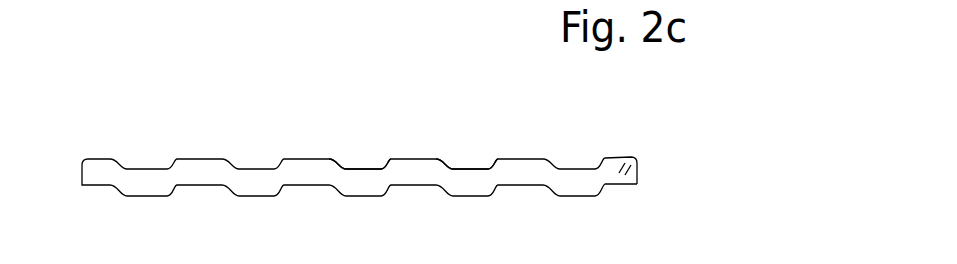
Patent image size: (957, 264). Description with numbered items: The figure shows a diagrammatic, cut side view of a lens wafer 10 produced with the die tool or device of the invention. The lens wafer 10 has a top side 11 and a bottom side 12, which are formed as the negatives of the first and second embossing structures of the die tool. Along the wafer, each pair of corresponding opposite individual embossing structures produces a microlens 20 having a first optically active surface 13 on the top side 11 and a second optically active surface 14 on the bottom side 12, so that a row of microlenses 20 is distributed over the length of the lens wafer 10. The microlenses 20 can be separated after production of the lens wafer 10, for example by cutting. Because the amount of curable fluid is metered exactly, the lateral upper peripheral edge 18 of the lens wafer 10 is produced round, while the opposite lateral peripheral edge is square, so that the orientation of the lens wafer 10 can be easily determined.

The lens wafer 10 is at (118, 86).
The top side 11 is at (200, 158).
The bottom side 12 is at (195, 187).
The first optically active surface 13 is at (148, 168).
The second optically active surface 14 is at (140, 197).
The lateral upper peripheral edge 18 is at (83, 156).
The microlens 20 is at (362, 143).